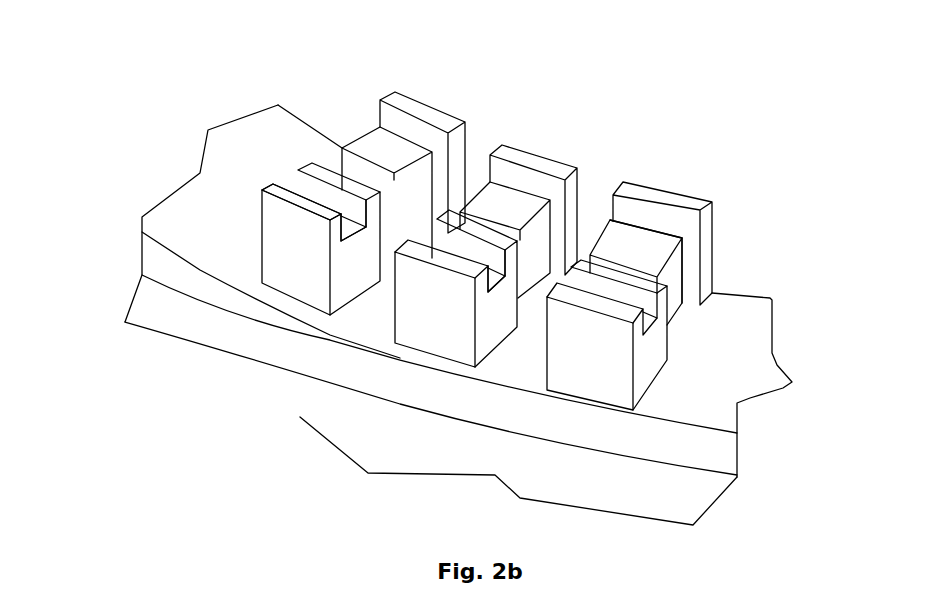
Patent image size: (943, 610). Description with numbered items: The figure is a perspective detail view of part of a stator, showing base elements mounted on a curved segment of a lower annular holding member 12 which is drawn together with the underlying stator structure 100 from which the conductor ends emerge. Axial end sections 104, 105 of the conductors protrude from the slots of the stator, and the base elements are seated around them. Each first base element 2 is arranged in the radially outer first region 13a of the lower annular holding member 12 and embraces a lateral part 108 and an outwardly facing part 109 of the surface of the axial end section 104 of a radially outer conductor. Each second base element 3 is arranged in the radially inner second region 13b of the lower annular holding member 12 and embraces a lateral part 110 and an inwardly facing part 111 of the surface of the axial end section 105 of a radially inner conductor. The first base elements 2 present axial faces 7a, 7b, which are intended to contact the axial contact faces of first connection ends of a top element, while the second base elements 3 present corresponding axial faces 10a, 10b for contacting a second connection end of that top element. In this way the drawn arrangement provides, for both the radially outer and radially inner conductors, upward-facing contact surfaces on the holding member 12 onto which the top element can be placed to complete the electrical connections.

The first base element 2 is at (308, 273).
The second base element 3 is at (640, 215).
The axial face 7a is at (430, 253).
The axial face 7b is at (492, 282).
The axial face 10a is at (512, 150).
The axial face 10b is at (480, 208).
The lower annular holding member 12 is at (731, 378).
The radially outer first region 13a is at (219, 276).
The radially inner second region 13b is at (772, 300).
The base 100 is at (670, 483).
The axial end section 104 is at (605, 280).
The axial end section 105 is at (682, 283).
The lateral part 108 is at (355, 212).
The outwardly facing part 109 is at (307, 197).
The lateral part 110 is at (625, 235).
The inwardly facing part 111 is at (662, 225).